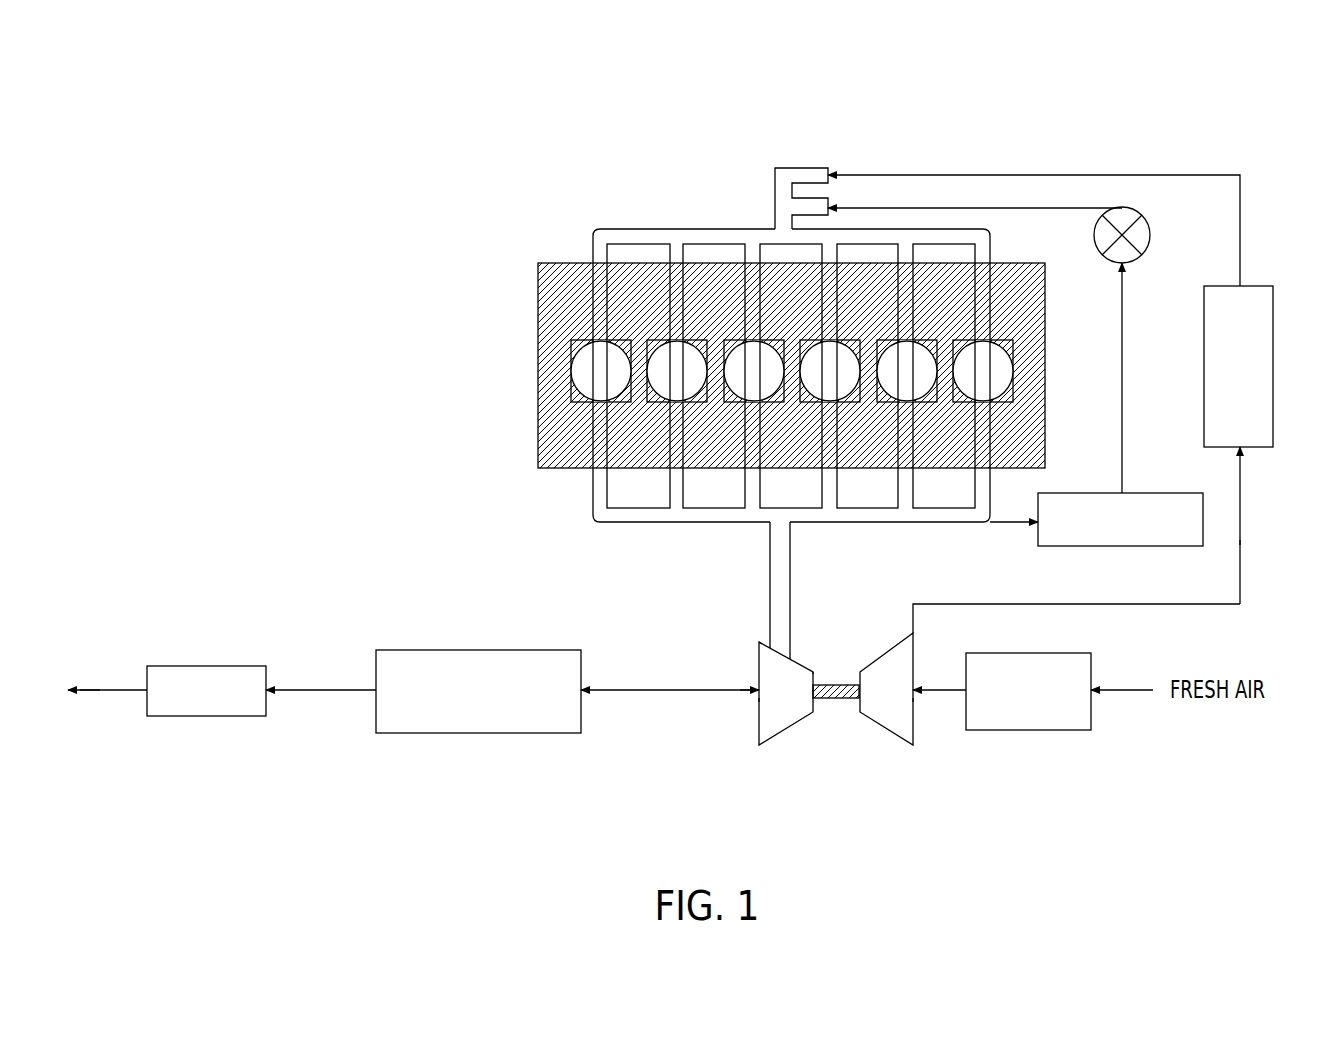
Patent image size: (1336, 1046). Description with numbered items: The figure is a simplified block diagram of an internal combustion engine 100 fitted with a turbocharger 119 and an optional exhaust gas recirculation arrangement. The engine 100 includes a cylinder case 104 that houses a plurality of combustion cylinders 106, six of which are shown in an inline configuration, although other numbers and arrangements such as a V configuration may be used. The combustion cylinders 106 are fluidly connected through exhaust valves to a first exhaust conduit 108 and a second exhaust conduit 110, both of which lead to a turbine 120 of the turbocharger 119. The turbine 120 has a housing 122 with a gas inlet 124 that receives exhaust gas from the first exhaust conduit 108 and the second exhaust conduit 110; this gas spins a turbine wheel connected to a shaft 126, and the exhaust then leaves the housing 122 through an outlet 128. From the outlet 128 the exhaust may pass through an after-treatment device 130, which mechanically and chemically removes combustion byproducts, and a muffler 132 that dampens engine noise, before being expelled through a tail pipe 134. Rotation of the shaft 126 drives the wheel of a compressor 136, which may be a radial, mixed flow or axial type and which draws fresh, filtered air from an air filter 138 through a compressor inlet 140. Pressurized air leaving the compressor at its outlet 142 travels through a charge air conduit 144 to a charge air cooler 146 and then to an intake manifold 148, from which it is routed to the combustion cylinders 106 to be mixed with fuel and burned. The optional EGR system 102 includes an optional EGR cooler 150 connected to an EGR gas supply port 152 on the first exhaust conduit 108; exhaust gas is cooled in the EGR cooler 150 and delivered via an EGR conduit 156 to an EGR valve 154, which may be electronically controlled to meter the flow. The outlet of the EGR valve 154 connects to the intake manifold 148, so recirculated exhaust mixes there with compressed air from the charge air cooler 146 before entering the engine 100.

The engine 100 is at (1178, 150).
The EGR system 102 is at (1209, 585).
The cylinder case 104 is at (548, 282).
The combustion cylinders 106 is at (598, 382).
The first exhaust conduit 108 is at (880, 522).
The second exhaust conduit 110 is at (655, 522).
The turbocharger 119 is at (966, 731).
The turbine 120 is at (783, 735).
The housing 122 is at (820, 670).
The gas inlet 124 is at (765, 645).
The shaft 126 is at (830, 698).
The outlet 128 is at (757, 700).
The after-treatment device 130 is at (478, 733).
The muffler 132 is at (205, 716).
The tail pipe 134 is at (118, 691).
The compressor 136 is at (880, 735).
The air filter 138 is at (1060, 730).
The compressor inlet 140 is at (915, 700).
The outlet 142 is at (905, 640).
The charge air conduit 144 is at (1240, 510).
The charge air cooler 146 is at (1262, 312).
The intake manifold 148 is at (803, 173).
The EGR cooler 150 is at (1060, 546).
The EGR gas supply port 152 is at (985, 522).
The EGR valve 154 is at (1145, 255).
The EGR conduit 156 is at (1122, 420).